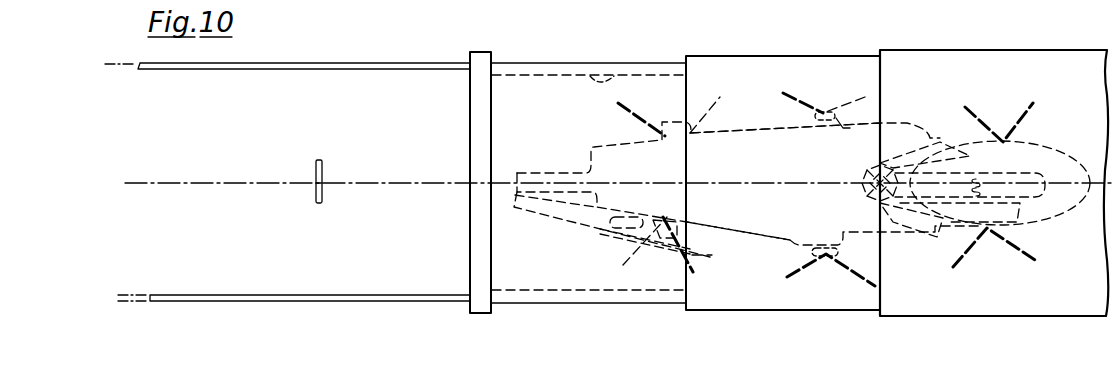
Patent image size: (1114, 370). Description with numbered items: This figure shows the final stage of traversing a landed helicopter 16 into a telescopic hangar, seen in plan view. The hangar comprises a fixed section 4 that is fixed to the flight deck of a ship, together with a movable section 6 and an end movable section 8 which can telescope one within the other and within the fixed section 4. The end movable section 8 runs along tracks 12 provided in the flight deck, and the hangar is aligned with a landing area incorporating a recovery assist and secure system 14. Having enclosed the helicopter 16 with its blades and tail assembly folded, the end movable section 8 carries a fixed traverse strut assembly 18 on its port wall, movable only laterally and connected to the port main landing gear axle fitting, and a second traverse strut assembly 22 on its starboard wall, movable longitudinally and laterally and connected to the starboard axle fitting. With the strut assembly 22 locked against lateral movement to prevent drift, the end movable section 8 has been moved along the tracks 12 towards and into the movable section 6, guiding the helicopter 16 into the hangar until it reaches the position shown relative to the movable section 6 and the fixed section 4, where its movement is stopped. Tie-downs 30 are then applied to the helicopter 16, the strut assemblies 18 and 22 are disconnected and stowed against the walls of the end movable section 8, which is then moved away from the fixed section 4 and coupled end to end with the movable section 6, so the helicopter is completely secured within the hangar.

The fixed section 4 is at (967, 303).
The movable section 6 is at (767, 302).
The end movable section 8 is at (547, 298).
The tracks 12 is at (308, 62).
The recovery assist and secure system 14 is at (300, 193).
The helicopter 16 is at (763, 178).
The fixed traverse strut assembly 18 is at (611, 76).
The second traverse strut assembly 22 is at (587, 289).
The tie-downs 30 is at (617, 108).